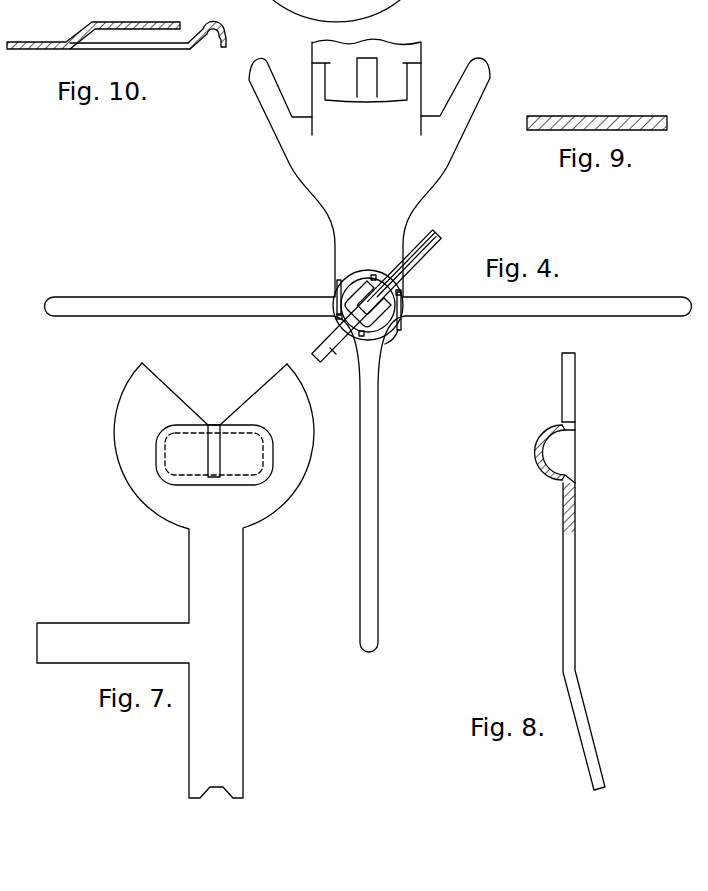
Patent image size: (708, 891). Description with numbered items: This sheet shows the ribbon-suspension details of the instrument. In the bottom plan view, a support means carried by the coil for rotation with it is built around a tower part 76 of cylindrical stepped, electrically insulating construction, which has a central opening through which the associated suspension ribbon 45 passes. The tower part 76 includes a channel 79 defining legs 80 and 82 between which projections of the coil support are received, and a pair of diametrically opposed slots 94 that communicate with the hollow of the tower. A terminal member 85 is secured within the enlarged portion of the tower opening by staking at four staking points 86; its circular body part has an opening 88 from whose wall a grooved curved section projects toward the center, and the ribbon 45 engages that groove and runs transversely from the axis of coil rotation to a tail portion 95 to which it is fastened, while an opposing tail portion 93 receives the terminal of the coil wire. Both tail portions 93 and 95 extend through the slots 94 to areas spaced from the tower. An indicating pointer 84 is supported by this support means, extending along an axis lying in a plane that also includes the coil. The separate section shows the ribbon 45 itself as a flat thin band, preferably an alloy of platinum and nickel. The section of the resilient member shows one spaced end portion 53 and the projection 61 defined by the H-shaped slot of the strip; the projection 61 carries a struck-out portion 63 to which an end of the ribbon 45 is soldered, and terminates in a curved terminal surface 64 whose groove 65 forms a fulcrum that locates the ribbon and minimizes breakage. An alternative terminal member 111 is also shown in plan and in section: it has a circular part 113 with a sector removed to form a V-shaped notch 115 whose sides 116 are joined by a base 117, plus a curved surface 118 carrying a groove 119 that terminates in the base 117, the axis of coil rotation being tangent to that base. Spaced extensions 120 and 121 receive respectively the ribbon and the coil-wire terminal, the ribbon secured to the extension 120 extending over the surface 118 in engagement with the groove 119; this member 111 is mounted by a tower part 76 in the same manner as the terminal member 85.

In FIG. 9, the suspension ribbon 45 is at (569, 116).
In FIG. 4, the suspension ribbon 45 is at (420, 271).
In FIG. 10, the end portion 53 is at (44, 42).
In FIG. 10, the projection 61 is at (130, 50).
In FIG. 10, the struck-out portion 63 is at (115, 23).
In FIG. 10, the curved terminal surface 64 is at (230, 36).
In FIG. 10, the groove 65 is at (219, 25).
In FIG. 4, the tower part 76 is at (329, 293).
In FIG. 4, the channel 79 is at (346, 277).
In FIG. 4, the leg 80 is at (333, 322).
In FIG. 4, the leg 82 is at (404, 317).
In FIG. 4, the indicating pointer 84 is at (415, 54).
In FIG. 4, the terminal member 85 is at (404, 249).
In FIG. 4, the staking points 86 is at (372, 276).
In FIG. 4, the opening 88 is at (398, 338).
In FIG. 4, the tail portion 93 is at (331, 357).
In FIG. 4, the slot 94 is at (379, 278).
In FIG. 4, the tail portion 95 is at (439, 241).
In FIG. 7, the terminal member 111 is at (189, 559).
In FIG. 8, the terminal member 111 is at (577, 546).
In FIG. 7, the circular part 113 is at (118, 452).
In FIG. 7, the V-shaped notch 115 is at (205, 360).
In FIG. 7, the sides 116 is at (165, 376).
In FIG. 7, the base 117 is at (212, 425).
In FIG. 8, the base 117 is at (568, 425).
In FIG. 7, the curved surface 118 is at (249, 440).
In FIG. 8, the curved surface 118 is at (538, 441).
In FIG. 7, the groove 119 is at (209, 454).
In FIG. 8, the groove 119 is at (545, 456).
In FIG. 7, the extension 120 is at (243, 698).
In FIG. 8, the extension 120 is at (590, 719).
In FIG. 7, the extension 121 is at (101, 622).